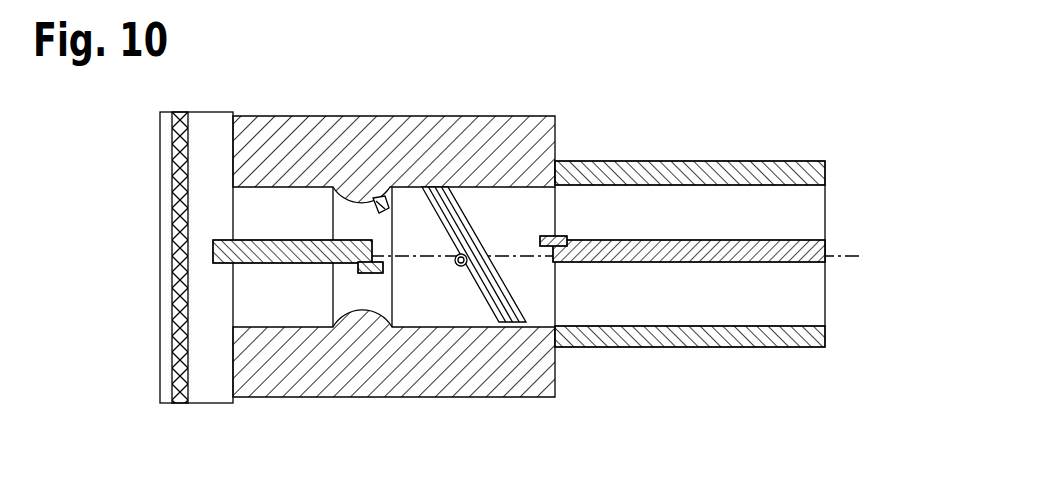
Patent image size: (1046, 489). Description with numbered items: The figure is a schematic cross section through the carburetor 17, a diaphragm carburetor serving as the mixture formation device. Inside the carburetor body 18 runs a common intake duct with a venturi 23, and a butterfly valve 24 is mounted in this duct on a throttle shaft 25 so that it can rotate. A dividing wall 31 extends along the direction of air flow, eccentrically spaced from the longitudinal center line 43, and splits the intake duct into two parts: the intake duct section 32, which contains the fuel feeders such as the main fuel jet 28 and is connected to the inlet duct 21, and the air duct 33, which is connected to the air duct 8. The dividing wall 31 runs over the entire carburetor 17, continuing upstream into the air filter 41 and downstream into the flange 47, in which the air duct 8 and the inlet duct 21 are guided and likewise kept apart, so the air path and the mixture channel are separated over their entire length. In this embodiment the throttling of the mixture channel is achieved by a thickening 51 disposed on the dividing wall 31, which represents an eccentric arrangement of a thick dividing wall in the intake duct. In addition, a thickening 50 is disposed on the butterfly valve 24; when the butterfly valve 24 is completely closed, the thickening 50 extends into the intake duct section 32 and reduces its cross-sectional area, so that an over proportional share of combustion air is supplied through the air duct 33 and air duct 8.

The air duct 8 is at (767, 306).
The carburetor 17 is at (498, 74).
The carburetor body 18 is at (263, 114).
The inlet duct 21 is at (767, 194).
The venturi 23 is at (357, 200).
The butterfly valve 24 is at (507, 323).
The throttle shaft 25 is at (459, 266).
The main fuel jet 28 is at (396, 195).
The dividing wall 31 is at (648, 263).
The intake duct section 32 is at (285, 226).
The air duct 33 is at (279, 312).
The air filter 41 is at (138, 355).
The longitudinal center line 43 is at (851, 251).
The flange 47 is at (635, 164).
The thickening 50 is at (464, 255).
The thickening 51 is at (656, 240).